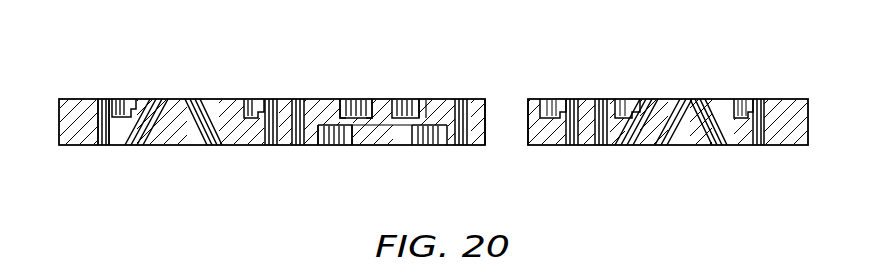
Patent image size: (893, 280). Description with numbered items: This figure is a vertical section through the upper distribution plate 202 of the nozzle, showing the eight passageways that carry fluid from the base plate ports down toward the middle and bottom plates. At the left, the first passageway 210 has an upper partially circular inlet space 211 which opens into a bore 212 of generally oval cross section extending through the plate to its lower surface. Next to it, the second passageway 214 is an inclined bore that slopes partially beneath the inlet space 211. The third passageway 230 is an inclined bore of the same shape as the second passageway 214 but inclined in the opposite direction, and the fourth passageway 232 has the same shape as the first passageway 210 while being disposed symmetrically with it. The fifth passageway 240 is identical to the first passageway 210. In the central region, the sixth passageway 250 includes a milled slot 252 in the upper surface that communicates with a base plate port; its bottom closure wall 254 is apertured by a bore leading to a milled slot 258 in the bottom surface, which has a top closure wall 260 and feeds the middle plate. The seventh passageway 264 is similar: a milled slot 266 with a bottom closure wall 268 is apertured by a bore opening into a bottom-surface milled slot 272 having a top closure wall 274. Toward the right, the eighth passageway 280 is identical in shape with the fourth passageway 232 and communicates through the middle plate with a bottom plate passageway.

The upper distribution plate 202 is at (204, 146).
The first passageway 210 is at (103, 99).
The inlet space 211 is at (121, 99).
The bore 212 is at (103, 145).
The second passageway 214 is at (150, 145).
The third passageway 230 is at (206, 99).
The fourth passageway 232 is at (270, 99).
The fifth passageway 240 is at (298, 145).
The sixth passageway 250 is at (358, 98).
The milled slot 252 is at (371, 99).
The bottom closure wall 254 is at (341, 99).
The milled slot 258 is at (439, 147).
The top closure wall 260 is at (380, 146).
The seventh passageway 264 is at (418, 98).
The milled slot 266 is at (432, 100).
The bottom closure wall 268 is at (405, 99).
The milled slot 272 is at (323, 146).
The top closure wall 274 is at (340, 146).
The eighth passageway 280 is at (470, 140).